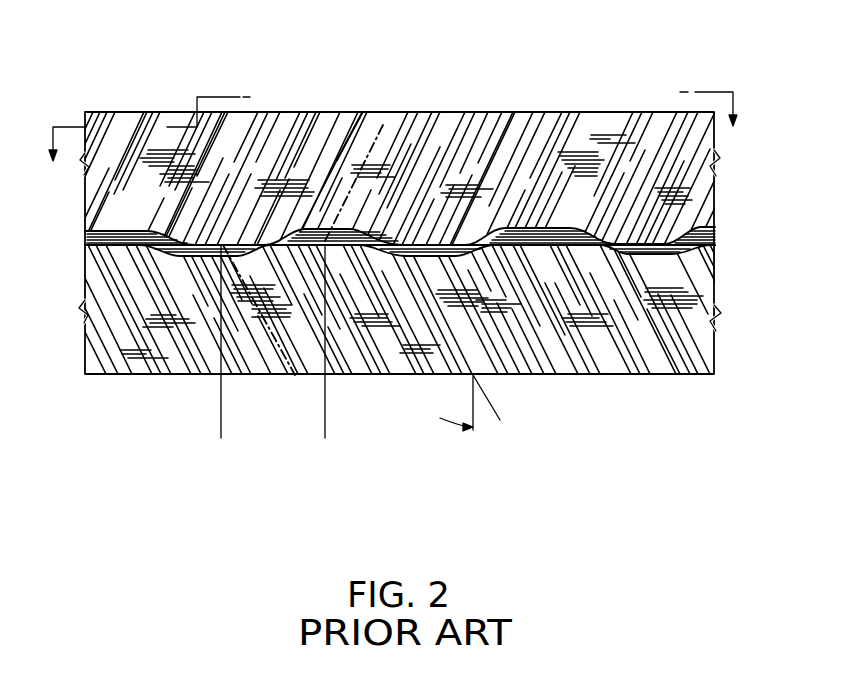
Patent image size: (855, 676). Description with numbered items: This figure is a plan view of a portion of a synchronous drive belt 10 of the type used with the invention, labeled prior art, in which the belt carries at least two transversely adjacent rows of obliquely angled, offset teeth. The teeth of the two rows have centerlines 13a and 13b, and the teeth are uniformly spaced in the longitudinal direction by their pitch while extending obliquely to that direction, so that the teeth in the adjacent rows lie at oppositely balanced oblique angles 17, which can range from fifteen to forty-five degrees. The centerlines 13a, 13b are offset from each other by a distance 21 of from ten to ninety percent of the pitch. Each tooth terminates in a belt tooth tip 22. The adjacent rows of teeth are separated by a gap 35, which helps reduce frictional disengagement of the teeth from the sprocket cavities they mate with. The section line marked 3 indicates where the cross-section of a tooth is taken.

The drive belt 10 is at (573, 100).
The belt tooth tip 22 is at (380, 122).
The centerline of first row of teeth 13a is at (392, 126).
The centerline of second row of teeth 13b is at (290, 366).
The gap 35 is at (713, 237).
The offset distance 21 is at (325, 425).
The oblique angle 17 is at (500, 420).
The section line 3- 3 is at (393, 111).